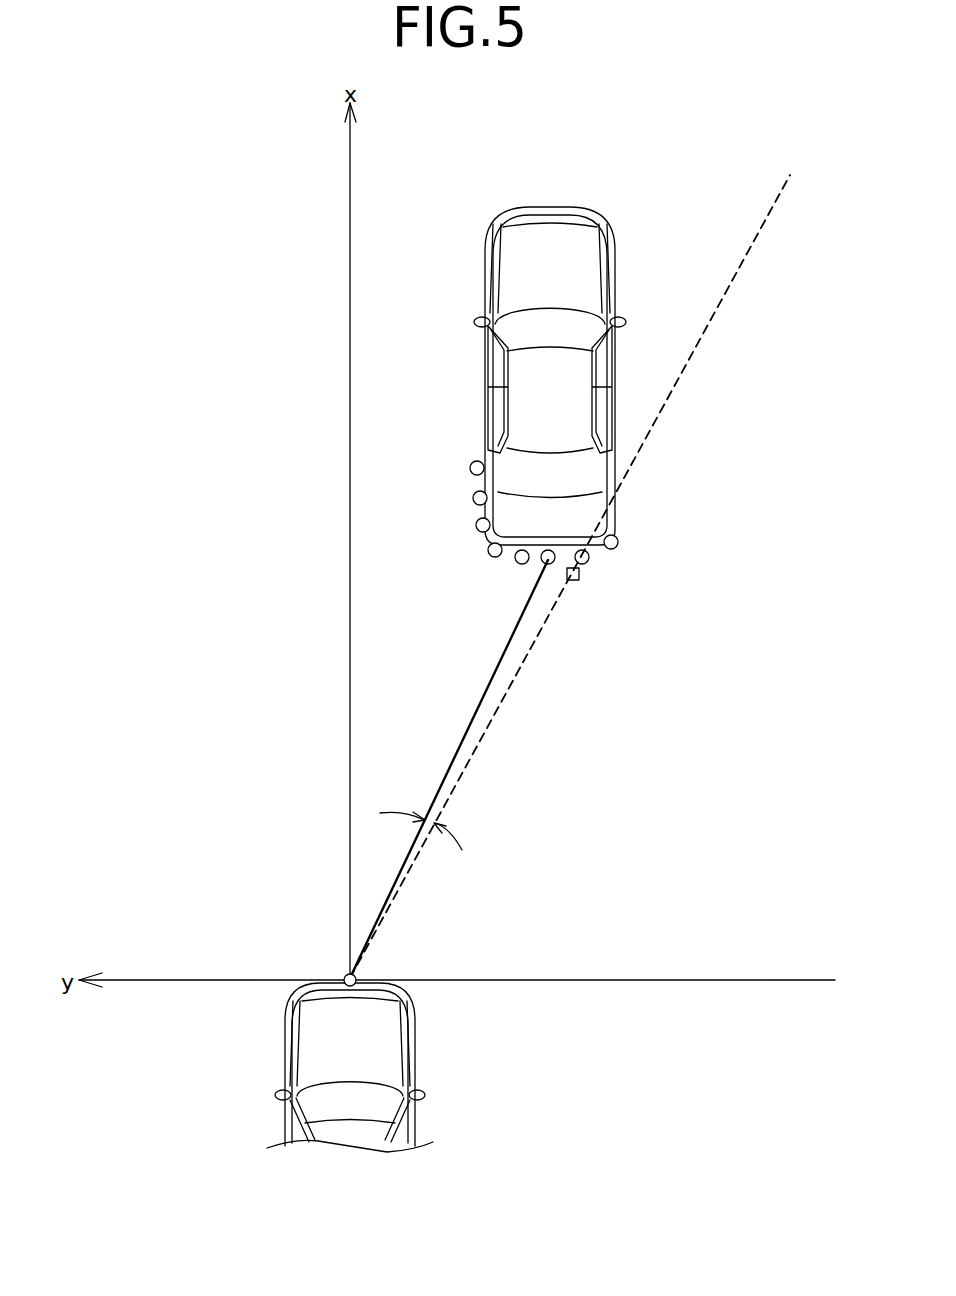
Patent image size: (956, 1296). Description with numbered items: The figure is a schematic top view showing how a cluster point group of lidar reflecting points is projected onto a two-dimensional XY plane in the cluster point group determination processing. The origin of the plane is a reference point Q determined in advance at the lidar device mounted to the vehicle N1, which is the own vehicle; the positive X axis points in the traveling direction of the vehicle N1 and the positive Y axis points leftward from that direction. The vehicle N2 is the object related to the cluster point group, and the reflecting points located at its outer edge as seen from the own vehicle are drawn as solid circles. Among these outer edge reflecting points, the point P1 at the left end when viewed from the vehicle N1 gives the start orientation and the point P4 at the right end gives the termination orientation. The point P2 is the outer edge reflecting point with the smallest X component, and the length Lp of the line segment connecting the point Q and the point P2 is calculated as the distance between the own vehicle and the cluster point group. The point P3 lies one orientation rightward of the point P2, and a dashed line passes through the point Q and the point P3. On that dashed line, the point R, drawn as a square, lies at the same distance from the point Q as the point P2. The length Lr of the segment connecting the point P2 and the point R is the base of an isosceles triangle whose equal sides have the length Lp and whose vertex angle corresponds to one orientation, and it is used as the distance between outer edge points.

The vehicle N1 is at (355, 1138).
The vehicle N2 is at (548, 226).
The outer edge reflecting point P1 is at (470, 468).
The outer edge reflecting point P2 is at (542, 562).
The reflecting point P3 is at (589, 558).
The outer edge reflecting point P4 is at (618, 540).
The point R is at (580, 578).
The reference point Q is at (344, 975).
The length of line segment Lp is at (486, 690).
The length of line segment Lr is at (573, 582).